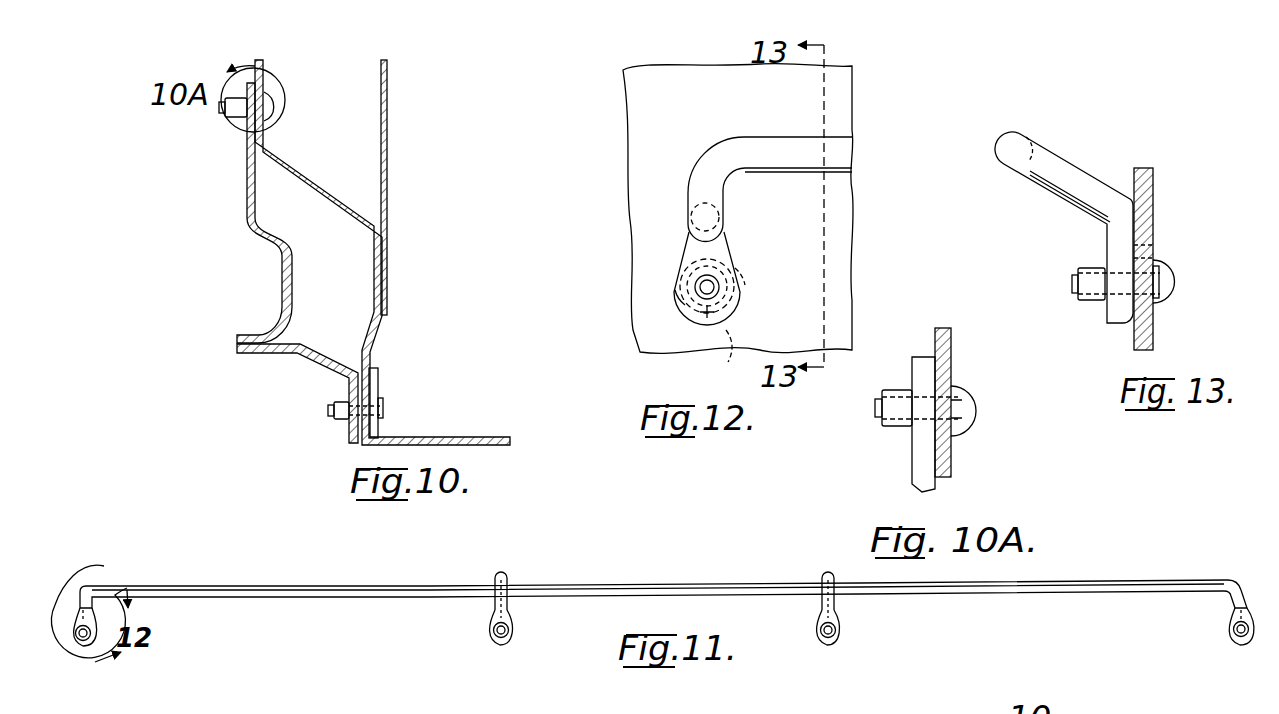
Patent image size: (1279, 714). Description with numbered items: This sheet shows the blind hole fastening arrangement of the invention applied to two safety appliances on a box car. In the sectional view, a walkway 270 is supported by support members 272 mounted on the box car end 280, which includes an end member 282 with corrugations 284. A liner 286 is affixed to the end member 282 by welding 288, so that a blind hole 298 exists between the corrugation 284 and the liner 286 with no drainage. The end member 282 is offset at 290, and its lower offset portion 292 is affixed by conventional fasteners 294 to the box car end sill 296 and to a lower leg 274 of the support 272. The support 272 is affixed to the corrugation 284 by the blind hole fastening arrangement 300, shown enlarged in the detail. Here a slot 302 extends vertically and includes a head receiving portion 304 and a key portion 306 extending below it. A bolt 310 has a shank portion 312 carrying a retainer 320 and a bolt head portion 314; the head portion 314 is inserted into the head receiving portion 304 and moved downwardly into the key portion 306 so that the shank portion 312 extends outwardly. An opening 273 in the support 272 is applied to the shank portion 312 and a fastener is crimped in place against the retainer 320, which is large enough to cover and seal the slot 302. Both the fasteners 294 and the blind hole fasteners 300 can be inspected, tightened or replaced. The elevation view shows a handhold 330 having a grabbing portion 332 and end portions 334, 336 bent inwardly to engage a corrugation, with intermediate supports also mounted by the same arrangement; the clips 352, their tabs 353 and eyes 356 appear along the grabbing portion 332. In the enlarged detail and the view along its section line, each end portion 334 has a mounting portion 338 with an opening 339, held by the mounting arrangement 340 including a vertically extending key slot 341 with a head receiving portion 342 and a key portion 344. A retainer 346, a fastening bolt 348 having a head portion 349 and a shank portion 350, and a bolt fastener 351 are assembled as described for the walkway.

In FIG. 10, the walkway 270 is at (240, 227).
In FIG. 10, the support member 272 is at (284, 300).
In FIG. 10A, the support member 272 is at (914, 378).
In FIG. 10A, the opening 273 is at (905, 428).
In FIG. 10, the lower leg 274 is at (284, 238).
In FIG. 10, the box car end 280 is at (274, 150).
In FIG. 10, the end member 282 is at (298, 175).
In FIG. 10, the corrugation 284 is at (265, 74).
In FIG. 10A, the corrugation 284 is at (934, 341).
In FIG. 10, the liner 286 is at (388, 196).
In FIG. 10, the welding 288 is at (374, 325).
In FIG. 10, the offset 290 is at (371, 355).
In FIG. 10, the lower offset portion 292 is at (378, 388).
In FIG. 10, the fastener 294 is at (332, 408).
In FIG. 10, the end sill 296 is at (400, 438).
In FIG. 10, the blind hole 298 is at (269, 120).
In FIG. 10A, the blind hole 298 is at (958, 440).
In FIG. 10, the blind hole fastening arrangement 300 is at (229, 126).
In FIG. 10A, the slot 302 is at (965, 366).
In FIG. 10A, the head receiving portion 304 is at (962, 362).
In FIG. 10A, the key portion 306 is at (962, 456).
In FIG. 10A, the bolt 310 is at (965, 427).
In FIG. 10A, the shank portion 312 is at (882, 408).
In FIG. 10A, the bolt head portion 314 is at (967, 410).
In FIG. 10A, the retainer 320 is at (910, 428).
In FIG. 12, the handhold 330 is at (801, 134).
In FIG. 11, the handhold 330 is at (769, 579).
In FIG. 12, the grabbing portion 332 is at (840, 165).
In FIG. 11, the grabbing portion 332 is at (258, 598).
In FIG. 13, the end portion 334 is at (1066, 196).
In FIG. 11, the end portion 334 is at (113, 597).
In FIG. 11, the end portion 336 is at (1247, 592).
In FIG. 12, the mounting portion 338 is at (744, 276).
In FIG. 12, the opening 339 is at (740, 302).
In FIG. 12, the mounting arrangement 340 is at (659, 274).
In FIG. 12, the key slot 341 is at (733, 251).
In FIG. 12, the head receiving portion 342 is at (729, 266).
In FIG. 12, the key portion 344 is at (630, 312).
In FIG. 12, the retainer 346 is at (726, 362).
In FIG. 12, the fastening bolt 348 is at (750, 290).
In FIG. 13, the fastening bolt 348 is at (1166, 312).
In FIG. 12, the head portion 349 is at (668, 322).
In FIG. 13, the head portion 349 is at (1162, 285).
In FIG. 13, the shank portion 350 is at (1076, 288).
In FIG. 13, the bolt fastener 351 is at (1097, 300).
In FIG. 11, the hanger clip 352 is at (490, 628).
In FIG. 11, the clip tab 353 is at (508, 598).
In FIG. 11, the clip eye 356 is at (508, 644).